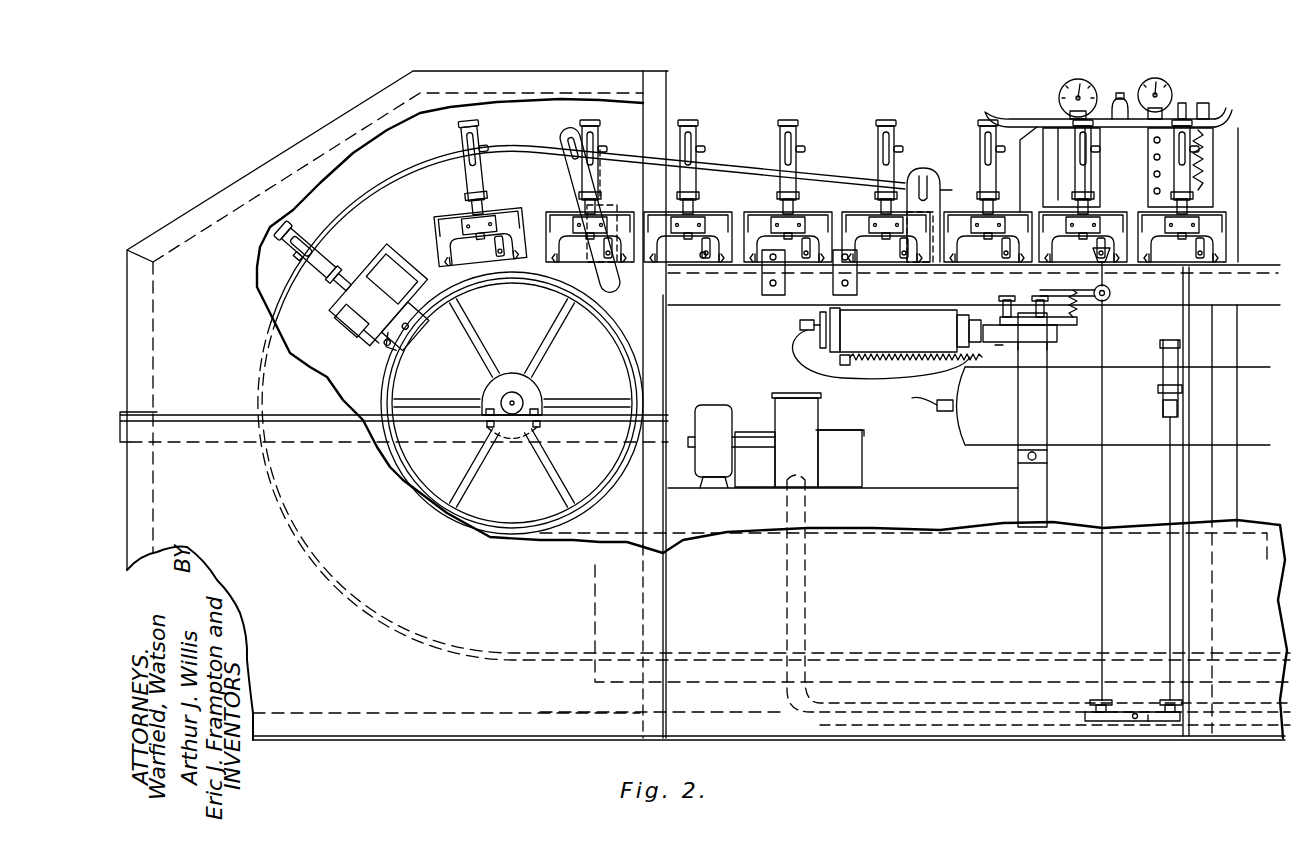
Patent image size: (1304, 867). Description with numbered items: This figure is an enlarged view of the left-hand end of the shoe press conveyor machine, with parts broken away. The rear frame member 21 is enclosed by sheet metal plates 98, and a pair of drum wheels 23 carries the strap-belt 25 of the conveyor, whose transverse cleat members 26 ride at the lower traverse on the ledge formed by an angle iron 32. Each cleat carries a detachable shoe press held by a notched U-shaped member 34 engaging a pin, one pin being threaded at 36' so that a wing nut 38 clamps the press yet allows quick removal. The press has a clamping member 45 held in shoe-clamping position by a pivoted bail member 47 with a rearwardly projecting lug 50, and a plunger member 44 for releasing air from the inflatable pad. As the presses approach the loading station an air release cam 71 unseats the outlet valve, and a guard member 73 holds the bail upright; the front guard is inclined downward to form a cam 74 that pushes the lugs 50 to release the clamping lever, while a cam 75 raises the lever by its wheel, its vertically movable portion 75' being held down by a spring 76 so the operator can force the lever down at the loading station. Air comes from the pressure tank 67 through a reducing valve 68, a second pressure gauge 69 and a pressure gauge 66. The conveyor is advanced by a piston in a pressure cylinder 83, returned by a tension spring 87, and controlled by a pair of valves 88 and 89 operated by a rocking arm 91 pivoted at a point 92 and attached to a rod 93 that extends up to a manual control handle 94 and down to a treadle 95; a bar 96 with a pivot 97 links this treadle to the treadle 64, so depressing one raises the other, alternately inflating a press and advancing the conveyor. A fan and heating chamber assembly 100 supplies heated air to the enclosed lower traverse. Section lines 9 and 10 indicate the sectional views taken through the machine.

The sheet metal plates 98 is at (213, 245).
The guard members 73 is at (397, 178).
The bail member 47 is at (305, 240).
The rearwardly projecting lug 50 is at (345, 282).
The notched U-shaped member 34 is at (420, 290).
The wing nut 38 is at (372, 334).
The threaded pin member 36' is at (419, 343).
The transverse cleat members 26 is at (494, 272).
The drum wheels 23 is at (622, 336).
The strap-belt 25 is at (595, 553).
The angle iron 32 is at (617, 562).
The clamping member 45 is at (693, 140).
The cam 74 is at (840, 178).
The plunger member 44 is at (703, 258).
The air release cam 71 is at (813, 255).
The pressure cylinder 83 is at (891, 336).
The fan and heating chamber assembly 100 is at (775, 398).
The tension spring 87 is at (881, 368).
The valve 89 is at (1010, 303).
The pivot point 92 is at (1025, 287).
The manual control handle 94 is at (1100, 258).
The valve 88 is at (1038, 313).
The rocking arm 91 is at (1111, 293).
The rod 93 is at (1100, 477).
The pressure tank 67 is at (1145, 425).
The bar 96 is at (1112, 720).
The pivot 97 is at (1134, 722).
The treadle 95 is at (1148, 722).
The treadle 64 is at (1165, 700).
The section line 9 is at (945, 100).
The section line 10 is at (945, 745).
The cam 75 is at (1100, 147).
The pressure gauge 66 is at (1093, 74).
The reducing valve 68 is at (1121, 108).
The second pressure gauge 69 is at (1160, 87).
The vertically movable portion 75' is at (1235, 163).
The spring 76 is at (1200, 145).
The rear frame member 21 is at (1248, 272).